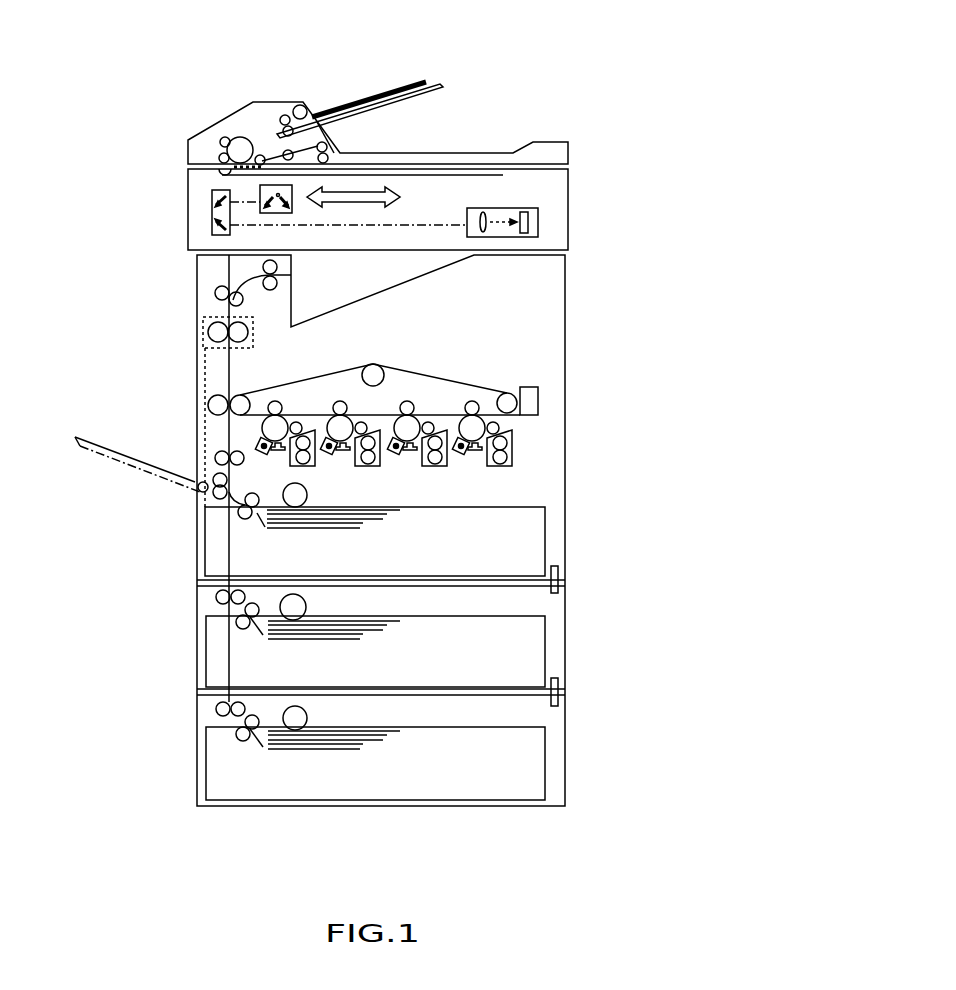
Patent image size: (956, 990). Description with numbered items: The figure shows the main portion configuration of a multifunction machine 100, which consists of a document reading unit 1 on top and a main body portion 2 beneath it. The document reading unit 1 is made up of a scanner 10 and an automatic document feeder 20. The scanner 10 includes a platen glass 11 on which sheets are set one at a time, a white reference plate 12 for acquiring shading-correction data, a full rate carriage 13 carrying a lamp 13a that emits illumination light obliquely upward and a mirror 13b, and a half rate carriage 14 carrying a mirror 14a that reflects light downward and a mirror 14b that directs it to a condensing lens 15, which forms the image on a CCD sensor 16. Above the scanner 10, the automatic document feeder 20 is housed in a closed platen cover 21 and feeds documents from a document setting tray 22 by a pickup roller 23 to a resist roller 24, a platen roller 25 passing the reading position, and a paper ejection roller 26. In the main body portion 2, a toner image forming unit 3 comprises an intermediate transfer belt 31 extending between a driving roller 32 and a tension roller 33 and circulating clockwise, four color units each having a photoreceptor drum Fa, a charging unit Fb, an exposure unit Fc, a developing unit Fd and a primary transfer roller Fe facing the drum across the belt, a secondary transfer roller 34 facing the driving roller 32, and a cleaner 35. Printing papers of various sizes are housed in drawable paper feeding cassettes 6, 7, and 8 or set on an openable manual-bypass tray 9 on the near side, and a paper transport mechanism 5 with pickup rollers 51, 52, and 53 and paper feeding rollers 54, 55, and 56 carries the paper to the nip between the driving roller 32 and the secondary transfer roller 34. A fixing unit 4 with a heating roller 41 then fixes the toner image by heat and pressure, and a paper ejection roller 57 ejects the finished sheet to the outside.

The multifunction machine 100 is at (546, 25).
The document reading unit 1 is at (86, 120).
The automatic document feeder 20 is at (130, 100).
The scanner 10 is at (130, 172).
The main body portion 2 is at (566, 348).
The toner image forming unit 3 is at (426, 352).
The fixing unit 4 is at (215, 316).
The paper transport mechanism 5 is at (228, 435).
The paper feeding cassette 6 is at (218, 540).
The paper feeding cassette 7 is at (218, 648).
The paper feeding cassette 8 is at (218, 760).
The manual-bypass tray 9 is at (203, 387).
The platen glass 11 is at (425, 178).
The white reference plate 12 is at (222, 182).
The full rate carriage 13 is at (295, 201).
The lamp 13a is at (294, 214).
The mirror 13b is at (277, 212).
The half rate carriage 14 is at (210, 229).
The mirror 14a is at (212, 196).
The mirror 14b is at (212, 226).
The condensing lens 15 is at (484, 211).
The CCD sensor 16 is at (525, 211).
The platen cover 21 is at (547, 141).
The document setting tray 22 is at (443, 87).
The pickup roller 23 is at (300, 105).
The resist roller 24 is at (282, 116).
The platen roller 25 is at (238, 146).
The paper ejection roller 26 is at (328, 146).
The intermediate transfer belt 31 is at (450, 380).
The driving roller 32 is at (246, 400).
The tension roller 33 is at (375, 364).
The secondary transfer roller 34 is at (208, 405).
The cleaner 35 is at (528, 387).
The heating roller 41 is at (212, 333).
The pickup roller 51 is at (303, 497).
The pickup roller 52 is at (294, 620).
The pickup roller 53 is at (296, 731).
The paper feeding roller 54 is at (243, 519).
The paper feeding roller 55 is at (236, 620).
The paper feeding roller 56 is at (236, 732).
The paper ejection roller 57 is at (270, 290).
The photoreceptor drum Fa is at (486, 422).
The charging unit Fb is at (458, 440).
The exposure unit Fc is at (510, 461).
The developing unit Fd is at (513, 447).
The primary transfer roller Fe is at (474, 400).